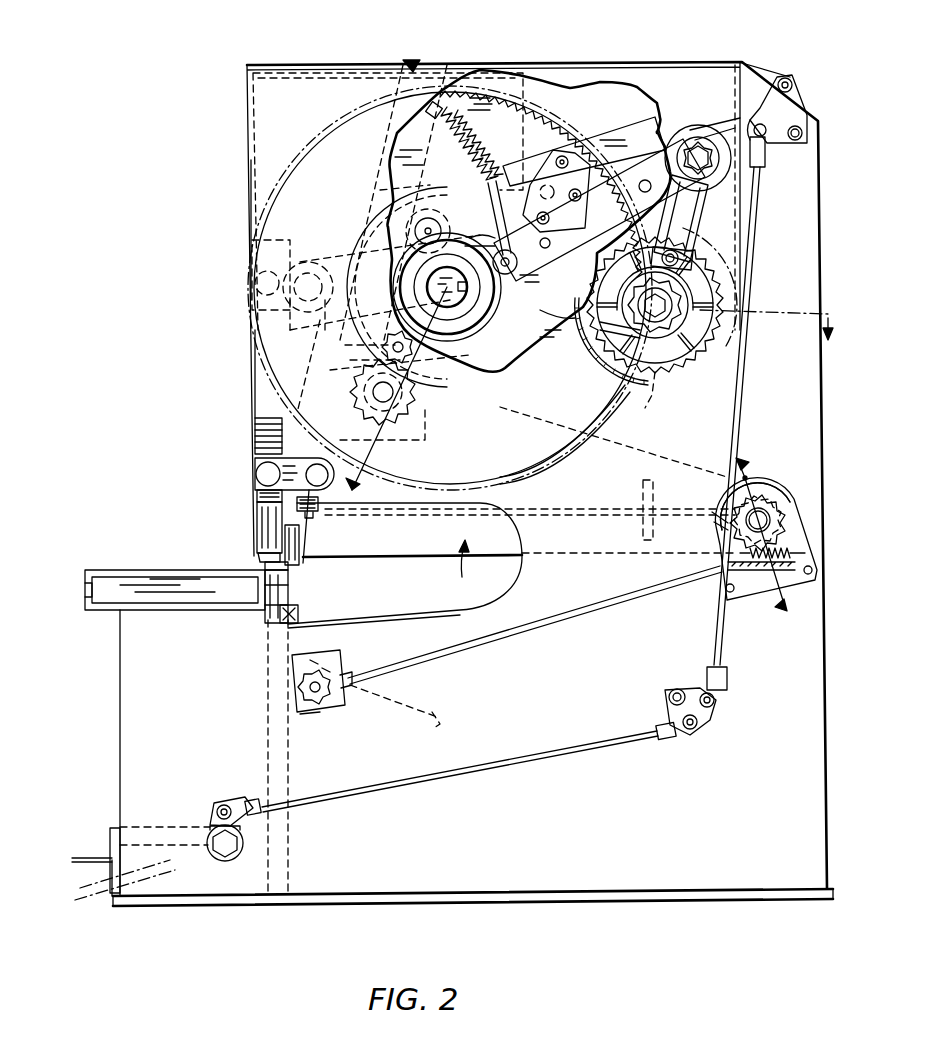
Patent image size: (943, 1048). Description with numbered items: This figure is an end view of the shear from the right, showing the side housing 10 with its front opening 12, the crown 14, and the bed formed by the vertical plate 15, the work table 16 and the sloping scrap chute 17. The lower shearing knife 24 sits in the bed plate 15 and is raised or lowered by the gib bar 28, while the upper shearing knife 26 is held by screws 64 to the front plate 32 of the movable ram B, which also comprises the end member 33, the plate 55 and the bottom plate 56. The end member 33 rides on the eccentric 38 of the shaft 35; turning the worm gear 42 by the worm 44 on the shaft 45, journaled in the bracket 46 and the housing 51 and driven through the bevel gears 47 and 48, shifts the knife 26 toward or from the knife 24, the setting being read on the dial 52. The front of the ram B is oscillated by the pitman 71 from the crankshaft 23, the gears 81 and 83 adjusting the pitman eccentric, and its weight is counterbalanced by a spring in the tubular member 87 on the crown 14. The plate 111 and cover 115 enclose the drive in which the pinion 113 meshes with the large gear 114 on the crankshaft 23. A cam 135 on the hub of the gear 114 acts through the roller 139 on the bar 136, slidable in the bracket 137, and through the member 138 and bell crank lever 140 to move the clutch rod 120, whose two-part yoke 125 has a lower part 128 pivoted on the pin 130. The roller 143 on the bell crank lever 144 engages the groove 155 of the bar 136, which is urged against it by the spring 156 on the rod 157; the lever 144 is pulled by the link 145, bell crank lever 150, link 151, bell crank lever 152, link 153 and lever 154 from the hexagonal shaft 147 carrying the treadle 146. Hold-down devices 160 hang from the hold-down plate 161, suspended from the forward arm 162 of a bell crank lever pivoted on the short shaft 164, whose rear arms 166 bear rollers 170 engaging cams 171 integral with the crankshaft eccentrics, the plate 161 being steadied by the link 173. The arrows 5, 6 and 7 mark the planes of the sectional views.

The side housing 10 is at (478, 893).
The opening 12 is at (410, 612).
The crown member 14 is at (255, 170).
The bed member 15 is at (275, 736).
The horizontal member 16 is at (126, 578).
The scrap chute member 17 is at (437, 705).
The crankshaft 23 is at (462, 392).
The lower shearing knife 24 is at (292, 580).
The upper shearing knife 26 is at (292, 566).
The gib bar 28 is at (300, 612).
The front plate 32 is at (256, 392).
The end member 33 is at (428, 560).
The shaft 35 is at (728, 505).
The eccentric 38 is at (725, 545).
The worm gear 42 is at (782, 515).
The worm 44 is at (762, 605).
The shaft 45 is at (612, 610).
The bracket 46 is at (766, 492).
The bevel gear 47 is at (334, 700).
The bevel gear 48 is at (290, 698).
The housing 51 is at (292, 668).
The dial 52 is at (316, 718).
The plate 55 is at (368, 438).
The bottom plate 56 is at (505, 475).
The screws 64 is at (302, 548).
The pitman 71 is at (399, 360).
The gear 81 is at (367, 343).
The gear 83 is at (400, 392).
The tubular member 87 is at (412, 62).
The plate 111 is at (268, 122).
The pinion gear 113 is at (590, 428).
The large gear 114 is at (532, 110).
The cover 115 is at (338, 68).
The rod 120 is at (710, 135).
The two-part yoke member 125 is at (700, 212).
The lower part of yoke 128 is at (682, 275).
The pin 130 is at (740, 186).
The cam 135 is at (450, 352).
The bar 136 is at (510, 335).
The bracket 137 is at (496, 168).
The member 138 is at (640, 190).
The roller 139 is at (539, 325).
The bell crank lever 140 is at (676, 125).
The roller 143 is at (556, 191).
The bell crank lever 144 is at (590, 138).
The link 145 is at (642, 136).
The treadle 146 is at (108, 832).
The hexagonal shaft 147 is at (225, 850).
The bell crank lever 150 is at (793, 140).
The link 151 is at (720, 282).
The bell crank lever 152 is at (718, 722).
The link 153 is at (480, 770).
The lever 154 is at (212, 810).
The groove 155 is at (594, 332).
The compression spring 156 is at (486, 140).
The rod 157 is at (460, 215).
The hold-down devices 160 is at (258, 524).
The hold-down plate 161 is at (258, 416).
The forward arm 162 is at (262, 258).
The short shaft 164 is at (345, 262).
The rear arm 166 is at (346, 245).
The roller 170 is at (380, 186).
The cam 171 is at (485, 238).
The link 173 is at (262, 447).
The section line 5 is at (592, 399).
The clevis 6 is at (751, 140).
The section line 7 is at (764, 455).
The movable ram B is at (471, 565).